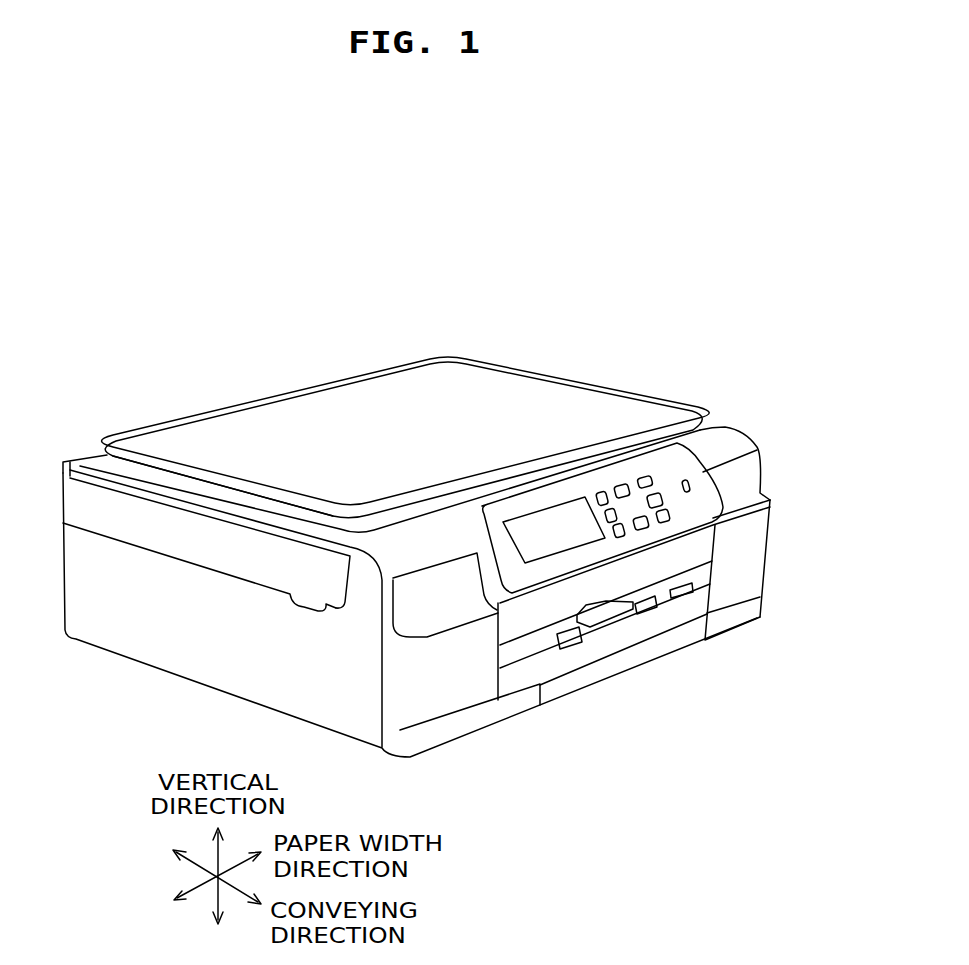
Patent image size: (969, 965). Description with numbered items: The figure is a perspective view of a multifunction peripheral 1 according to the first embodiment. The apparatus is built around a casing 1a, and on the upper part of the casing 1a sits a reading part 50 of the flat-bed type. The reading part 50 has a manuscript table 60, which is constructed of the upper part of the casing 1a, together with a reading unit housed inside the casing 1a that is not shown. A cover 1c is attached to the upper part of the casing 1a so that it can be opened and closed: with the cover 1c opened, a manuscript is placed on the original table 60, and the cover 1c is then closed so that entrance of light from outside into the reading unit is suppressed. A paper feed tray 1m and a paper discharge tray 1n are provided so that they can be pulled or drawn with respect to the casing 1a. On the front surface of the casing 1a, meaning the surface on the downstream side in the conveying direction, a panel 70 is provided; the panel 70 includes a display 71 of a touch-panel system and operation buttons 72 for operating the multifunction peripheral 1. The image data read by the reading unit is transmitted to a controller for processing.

The multifunction peripheral 1 is at (551, 216).
The casing 1a is at (757, 546).
The cover 1c is at (143, 437).
The paper feed tray 1m is at (615, 642).
The paper discharge tray 1n is at (650, 610).
The reading part 50 is at (567, 370).
The manuscript table 60 is at (717, 430).
The panel 70 is at (703, 498).
The display 71 is at (548, 506).
The operation buttons 72 is at (622, 483).